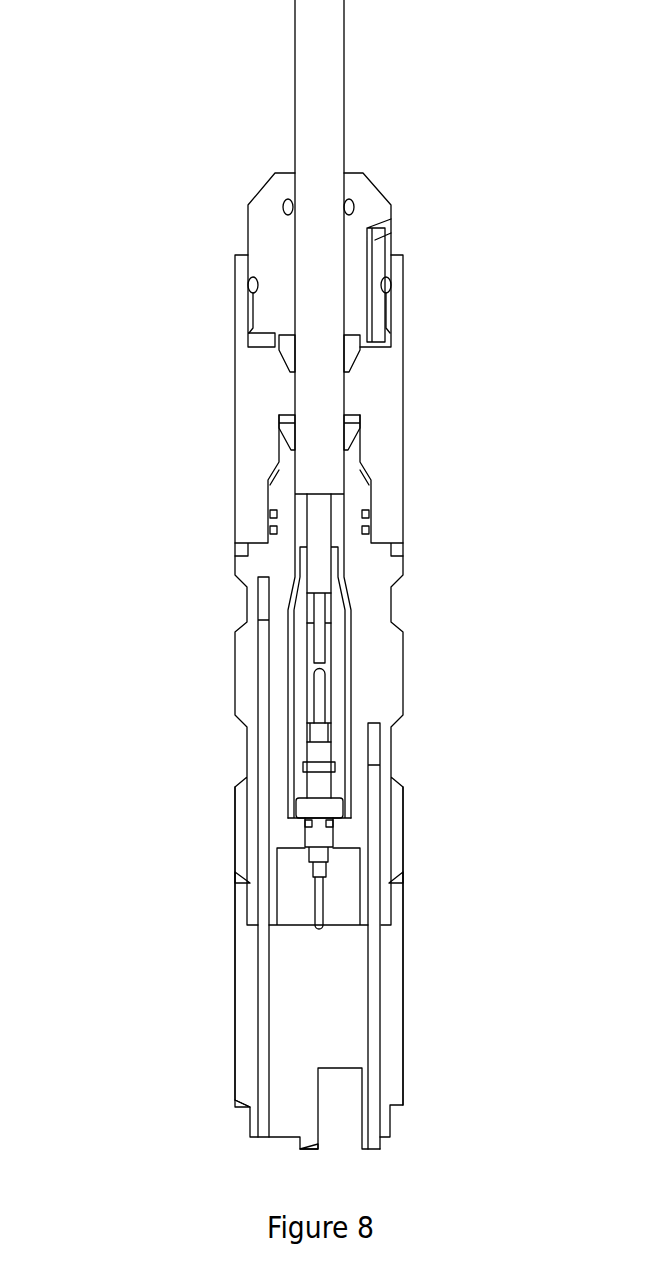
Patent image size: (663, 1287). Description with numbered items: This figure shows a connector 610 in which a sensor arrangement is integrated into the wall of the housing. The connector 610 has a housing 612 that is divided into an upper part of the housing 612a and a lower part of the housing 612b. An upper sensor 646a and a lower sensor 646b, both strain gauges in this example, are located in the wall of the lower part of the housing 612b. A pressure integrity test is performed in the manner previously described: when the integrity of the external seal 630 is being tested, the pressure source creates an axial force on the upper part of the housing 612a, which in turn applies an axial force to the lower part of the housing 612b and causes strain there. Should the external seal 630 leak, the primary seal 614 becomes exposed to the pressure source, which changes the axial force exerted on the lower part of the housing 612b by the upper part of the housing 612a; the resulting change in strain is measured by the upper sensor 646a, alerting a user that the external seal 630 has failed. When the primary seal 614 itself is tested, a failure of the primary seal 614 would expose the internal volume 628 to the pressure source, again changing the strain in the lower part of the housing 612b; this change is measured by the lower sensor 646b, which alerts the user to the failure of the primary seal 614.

The connector 610 is at (475, 227).
The housing 612 is at (164, 506).
The upper part of the housing 612a is at (377, 430).
The lower part of the housing 612b is at (405, 827).
The primary seal 614 is at (305, 430).
The internal volume 628 is at (348, 672).
The external seal 630 is at (347, 361).
The upper sensor 646a is at (258, 596).
The lower sensor 646b is at (374, 748).